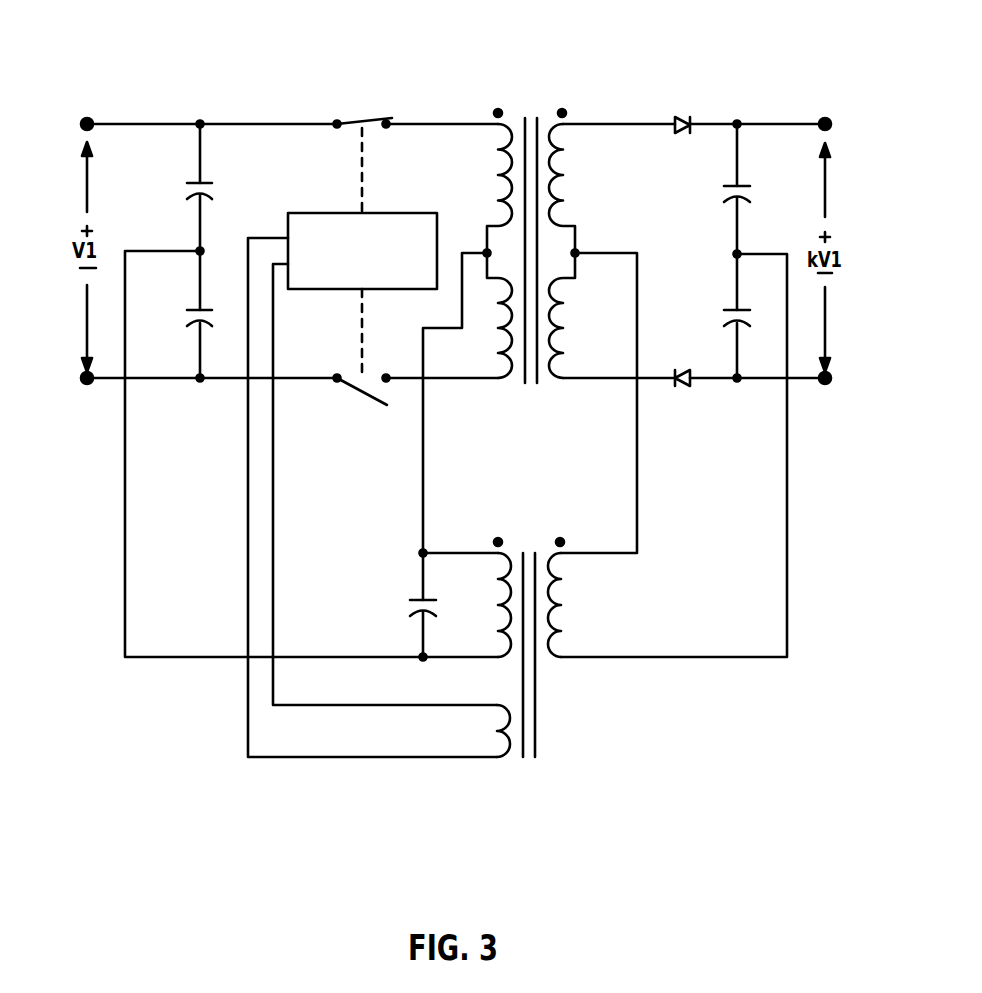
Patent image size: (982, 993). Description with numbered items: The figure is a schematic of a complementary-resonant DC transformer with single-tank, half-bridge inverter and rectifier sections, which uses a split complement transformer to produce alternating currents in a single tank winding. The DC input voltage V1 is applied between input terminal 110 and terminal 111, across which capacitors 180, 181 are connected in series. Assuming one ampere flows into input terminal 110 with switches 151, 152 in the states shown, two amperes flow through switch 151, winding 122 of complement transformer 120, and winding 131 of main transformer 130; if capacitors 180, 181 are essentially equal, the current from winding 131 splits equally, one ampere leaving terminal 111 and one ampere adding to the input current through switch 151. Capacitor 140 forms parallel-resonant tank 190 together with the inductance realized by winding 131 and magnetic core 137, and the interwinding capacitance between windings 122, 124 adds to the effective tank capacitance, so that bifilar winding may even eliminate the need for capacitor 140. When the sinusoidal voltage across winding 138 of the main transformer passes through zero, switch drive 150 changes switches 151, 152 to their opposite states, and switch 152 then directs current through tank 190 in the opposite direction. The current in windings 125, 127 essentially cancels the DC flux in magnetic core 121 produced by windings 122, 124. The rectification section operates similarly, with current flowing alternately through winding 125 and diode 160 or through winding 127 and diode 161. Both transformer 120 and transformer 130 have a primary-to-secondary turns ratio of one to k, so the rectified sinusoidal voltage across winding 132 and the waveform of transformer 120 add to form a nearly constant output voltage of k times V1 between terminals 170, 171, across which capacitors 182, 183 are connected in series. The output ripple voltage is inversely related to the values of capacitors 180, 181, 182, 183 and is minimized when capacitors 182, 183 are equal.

The input terminal 110 is at (87, 117).
The terminal 111 is at (87, 385).
The complement transformer 120 is at (528, 232).
The magnetic core 121 is at (528, 383).
The winding 122 is at (487, 120).
The winding 124 is at (487, 381).
The winding 125 is at (575, 120).
The winding 127 is at (575, 381).
The main transformer 130 is at (549, 657).
The winding 131 is at (487, 550).
The winding 132 is at (575, 551).
The magnetic core 137 is at (535, 745).
The winding 138 is at (445, 758).
The capacitor 140 is at (420, 598).
The switch drive 150 is at (325, 212).
The switch 151 is at (361, 122).
The switch 152 is at (360, 393).
The diode 160 is at (695, 126).
The diode 161 is at (695, 384).
The terminal 170 is at (812, 121).
The terminal 171 is at (812, 383).
The capacitor 180 is at (200, 180).
The capacitor 181 is at (200, 308).
The capacitor 182 is at (737, 183).
The capacitor 183 is at (737, 307).
The parallel-resonant tank 190 is at (369, 591).